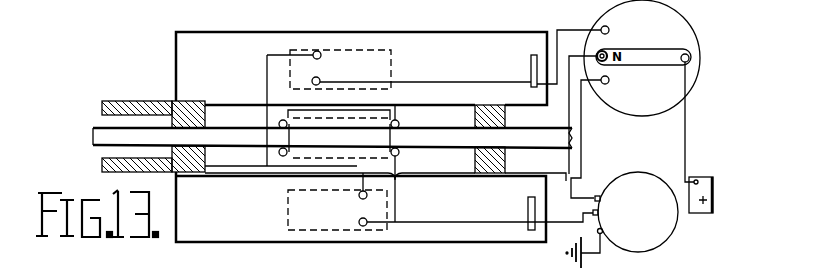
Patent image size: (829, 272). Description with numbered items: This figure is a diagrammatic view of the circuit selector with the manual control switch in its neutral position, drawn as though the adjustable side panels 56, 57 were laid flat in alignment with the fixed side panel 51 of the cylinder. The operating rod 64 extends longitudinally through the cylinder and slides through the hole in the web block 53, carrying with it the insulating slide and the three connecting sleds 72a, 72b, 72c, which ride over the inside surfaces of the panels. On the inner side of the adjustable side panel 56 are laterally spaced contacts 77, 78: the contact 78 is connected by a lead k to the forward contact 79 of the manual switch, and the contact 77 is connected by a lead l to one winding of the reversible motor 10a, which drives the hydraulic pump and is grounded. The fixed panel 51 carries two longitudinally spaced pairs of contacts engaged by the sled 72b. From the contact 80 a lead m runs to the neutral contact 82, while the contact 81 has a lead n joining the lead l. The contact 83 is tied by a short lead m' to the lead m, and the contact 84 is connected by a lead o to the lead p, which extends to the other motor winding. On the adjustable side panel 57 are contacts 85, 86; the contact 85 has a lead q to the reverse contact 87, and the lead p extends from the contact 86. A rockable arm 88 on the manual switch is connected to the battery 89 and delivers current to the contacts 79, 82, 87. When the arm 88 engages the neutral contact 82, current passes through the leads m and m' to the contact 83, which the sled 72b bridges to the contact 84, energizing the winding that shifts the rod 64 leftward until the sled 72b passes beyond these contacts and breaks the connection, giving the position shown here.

The reversible motor 10a is at (668, 243).
The fixed side panel 51 is at (462, 157).
The web block 53 is at (183, 172).
The adjustable side panel 56 is at (478, 43).
The adjustable side panel 57 is at (478, 238).
The operating rod 64 is at (103, 135).
The sled 72a is at (393, 66).
The sled 72b is at (299, 175).
The sled 72c is at (301, 222).
The contact 77 is at (319, 51).
The contact 78 is at (320, 77).
The contact 79 is at (608, 26).
The contact 80 is at (279, 124).
The contact 81 is at (279, 152).
The contact 82 is at (613, 49).
The contact 83 is at (399, 122).
The contact 84 is at (399, 150).
The contact 85 is at (359, 197).
The contact 86 is at (359, 222).
The contact 87 is at (607, 85).
The rockable arm 88 is at (656, 56).
The battery 89 is at (713, 210).
The lead l is at (267, 72).
The lead k is at (470, 82).
The lead m is at (494, 128).
The lead m' is at (411, 94).
The lead n is at (283, 162).
The lead o is at (397, 205).
The lead p is at (486, 208).
The lead q is at (581, 133).